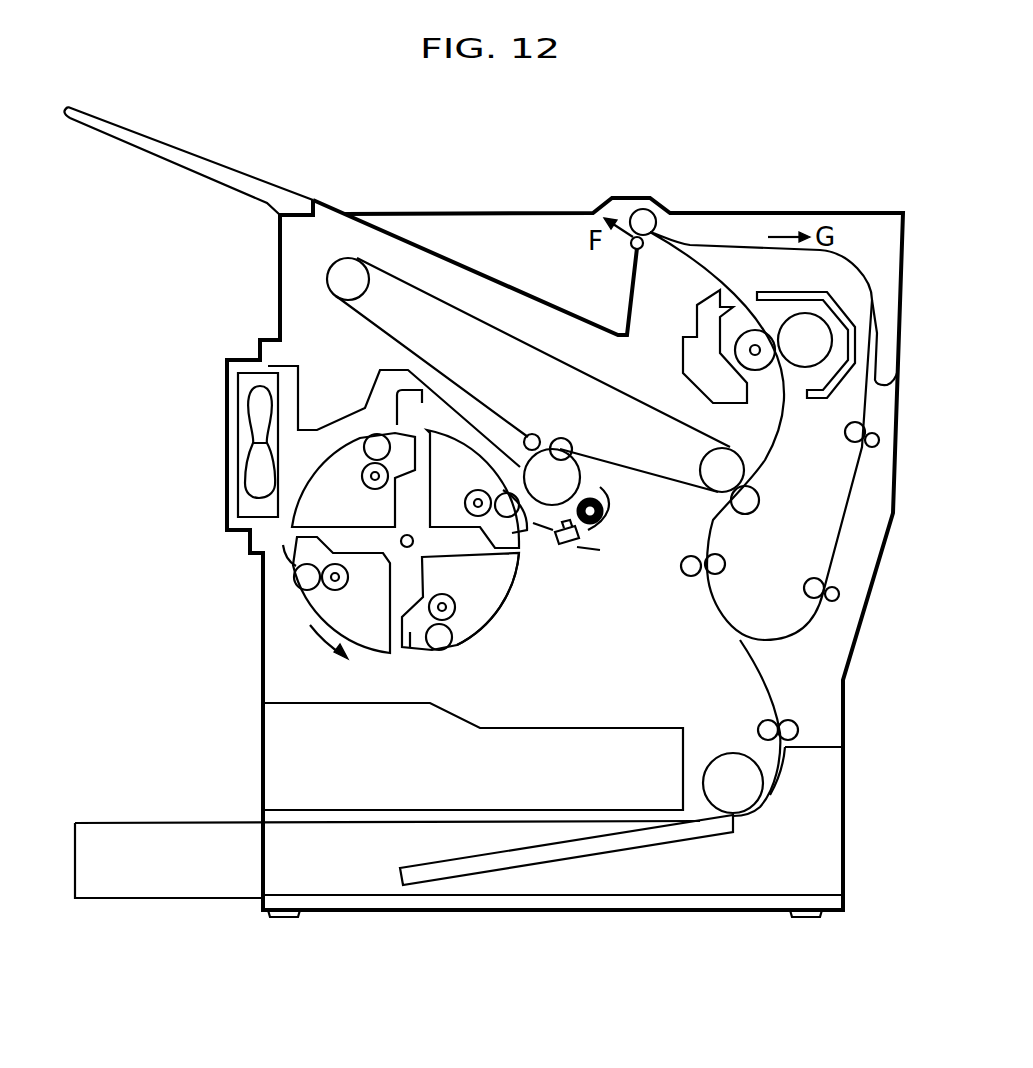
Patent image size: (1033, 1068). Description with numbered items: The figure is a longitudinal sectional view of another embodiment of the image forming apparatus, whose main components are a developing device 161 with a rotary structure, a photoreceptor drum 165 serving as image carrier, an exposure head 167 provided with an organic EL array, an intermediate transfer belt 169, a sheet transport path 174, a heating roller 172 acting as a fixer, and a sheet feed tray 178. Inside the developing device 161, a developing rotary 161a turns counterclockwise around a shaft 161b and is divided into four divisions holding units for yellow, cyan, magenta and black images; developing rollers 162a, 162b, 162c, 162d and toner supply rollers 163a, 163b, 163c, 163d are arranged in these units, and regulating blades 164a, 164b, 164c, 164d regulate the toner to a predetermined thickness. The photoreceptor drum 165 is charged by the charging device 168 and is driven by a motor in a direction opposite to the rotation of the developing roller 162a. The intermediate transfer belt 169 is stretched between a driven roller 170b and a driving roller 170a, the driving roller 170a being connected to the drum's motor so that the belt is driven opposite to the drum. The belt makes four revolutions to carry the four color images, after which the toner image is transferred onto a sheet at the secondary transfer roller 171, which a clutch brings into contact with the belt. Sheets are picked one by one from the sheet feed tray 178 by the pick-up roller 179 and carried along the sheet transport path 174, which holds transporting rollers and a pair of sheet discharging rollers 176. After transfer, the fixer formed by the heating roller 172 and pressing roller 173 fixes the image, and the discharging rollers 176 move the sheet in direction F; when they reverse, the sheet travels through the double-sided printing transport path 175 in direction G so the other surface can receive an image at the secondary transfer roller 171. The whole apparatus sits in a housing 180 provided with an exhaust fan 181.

The developing device 161 is at (304, 608).
The developing rotary 161a is at (488, 612).
The shaft 161b is at (401, 541).
The developing roller 162a is at (522, 528).
The developing roller 162b is at (360, 425).
The developing roller 162c is at (293, 570).
The developing roller 162d is at (452, 652).
The toner supply roller 163a is at (468, 490).
The toner supply roller 163b is at (362, 481).
The toner supply roller 163c is at (349, 580).
The toner supply roller 163d is at (477, 585).
The regulating blade 164a is at (540, 585).
The regulating blade 164b is at (433, 390).
The regulating blade 164c is at (285, 552).
The regulating blade 164d is at (415, 655).
The photoreceptor drum 165 is at (597, 442).
The exposure head 167 is at (603, 550).
The charging device 168 is at (605, 520).
The intermediate transfer belt 169 is at (425, 292).
The driving roller 170a is at (698, 466).
The driven roller 170b is at (370, 287).
The secondary transfer roller 171 is at (760, 490).
The heating roller 172 is at (810, 377).
The pressing roller 173 is at (756, 372).
The sheet transport path 174 is at (712, 246).
The double-sided printing transport path 175 is at (900, 377).
The sheet discharging rollers 176 is at (631, 208).
The sheet feed tray 178 is at (680, 841).
The pick-up roller 179 is at (722, 758).
The housing 180 is at (280, 297).
The exhaust fan 181 is at (260, 420).